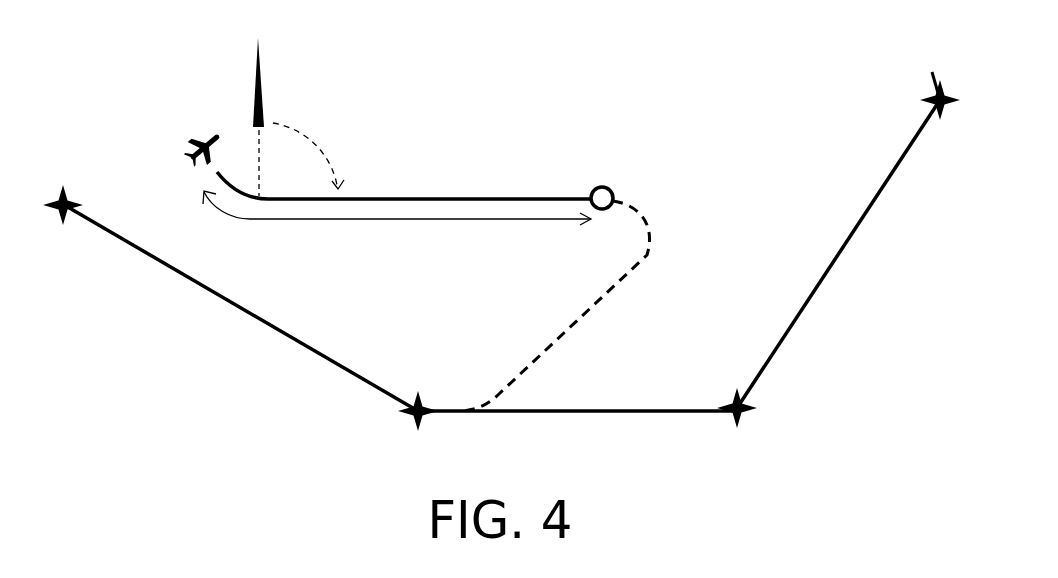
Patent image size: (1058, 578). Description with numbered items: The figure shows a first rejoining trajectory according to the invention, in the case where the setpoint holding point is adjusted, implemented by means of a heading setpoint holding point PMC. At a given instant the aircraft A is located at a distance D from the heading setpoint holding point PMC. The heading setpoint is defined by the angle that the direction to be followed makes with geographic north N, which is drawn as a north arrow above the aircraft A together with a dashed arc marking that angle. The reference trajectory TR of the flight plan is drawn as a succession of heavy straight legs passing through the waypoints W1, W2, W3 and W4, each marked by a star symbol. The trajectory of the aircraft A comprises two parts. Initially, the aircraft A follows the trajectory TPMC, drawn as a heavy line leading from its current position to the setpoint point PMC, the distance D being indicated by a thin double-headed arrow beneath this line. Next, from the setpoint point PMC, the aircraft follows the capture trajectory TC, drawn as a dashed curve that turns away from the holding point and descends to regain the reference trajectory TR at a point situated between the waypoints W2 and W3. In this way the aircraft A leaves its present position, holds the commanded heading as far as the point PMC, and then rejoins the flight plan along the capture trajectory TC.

The geographic north N is at (259, 107).
The aircraft A is at (182, 158).
The trajectory to the setpoint point TPMC is at (465, 197).
The heading setpoint holding point PMC is at (601, 186).
The distance D is at (397, 222).
The capture trajectory TC is at (546, 356).
The reference trajectory TR is at (617, 411).
The waypoint W1 is at (922, 101).
The waypoint W2 is at (735, 390).
The waypoint W3 is at (418, 392).
The waypoint W4 is at (68, 217).